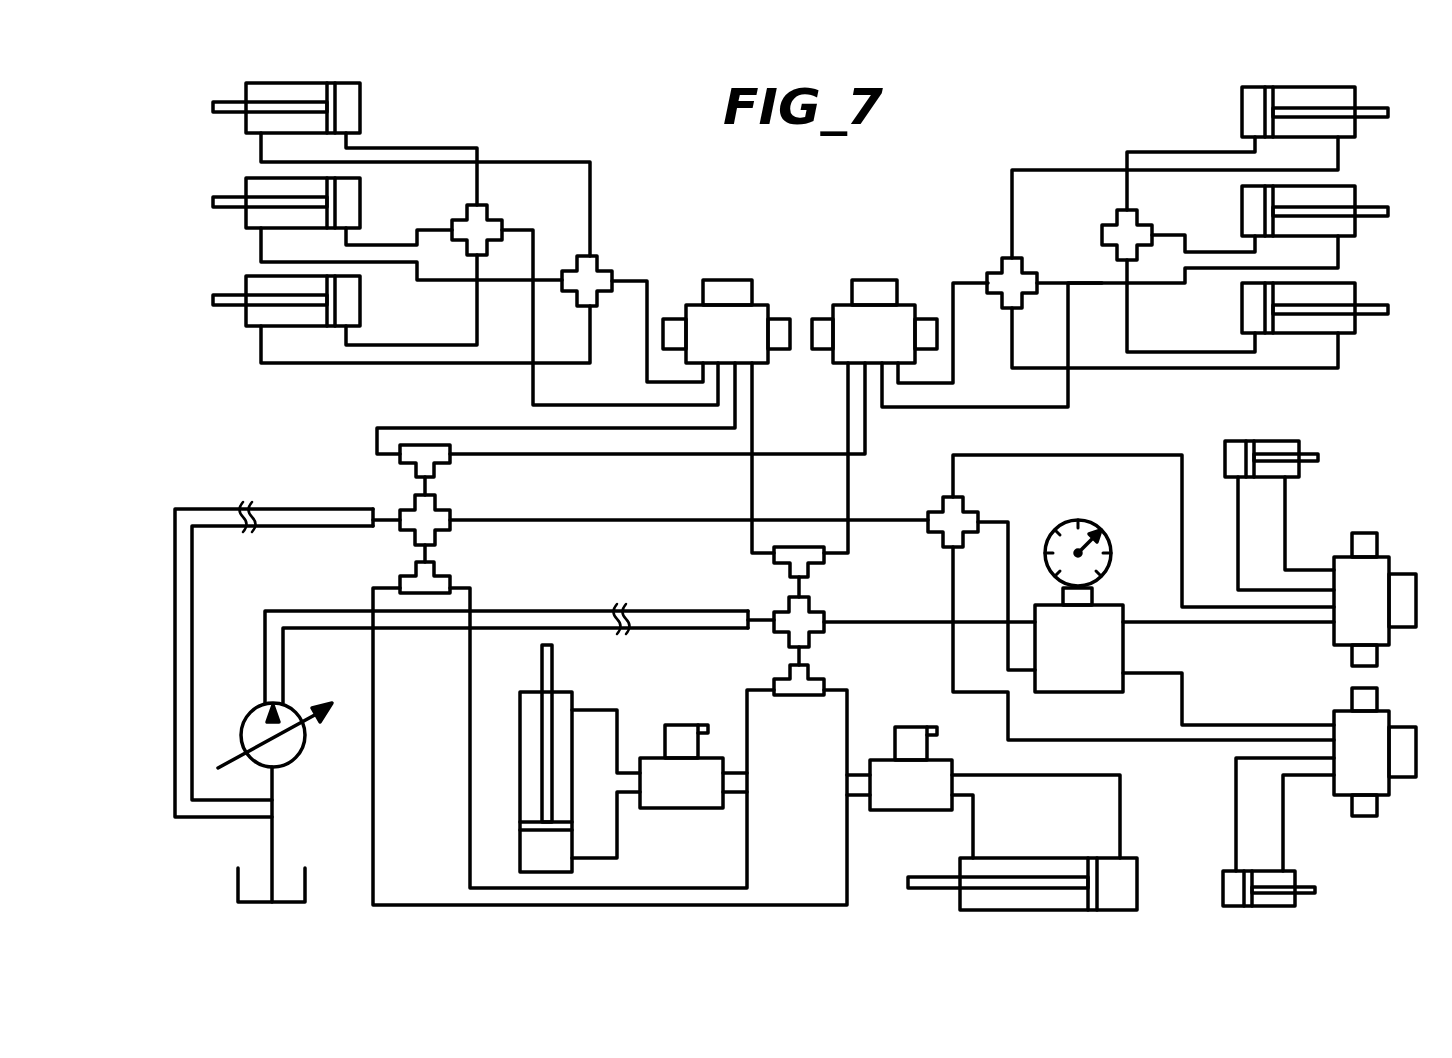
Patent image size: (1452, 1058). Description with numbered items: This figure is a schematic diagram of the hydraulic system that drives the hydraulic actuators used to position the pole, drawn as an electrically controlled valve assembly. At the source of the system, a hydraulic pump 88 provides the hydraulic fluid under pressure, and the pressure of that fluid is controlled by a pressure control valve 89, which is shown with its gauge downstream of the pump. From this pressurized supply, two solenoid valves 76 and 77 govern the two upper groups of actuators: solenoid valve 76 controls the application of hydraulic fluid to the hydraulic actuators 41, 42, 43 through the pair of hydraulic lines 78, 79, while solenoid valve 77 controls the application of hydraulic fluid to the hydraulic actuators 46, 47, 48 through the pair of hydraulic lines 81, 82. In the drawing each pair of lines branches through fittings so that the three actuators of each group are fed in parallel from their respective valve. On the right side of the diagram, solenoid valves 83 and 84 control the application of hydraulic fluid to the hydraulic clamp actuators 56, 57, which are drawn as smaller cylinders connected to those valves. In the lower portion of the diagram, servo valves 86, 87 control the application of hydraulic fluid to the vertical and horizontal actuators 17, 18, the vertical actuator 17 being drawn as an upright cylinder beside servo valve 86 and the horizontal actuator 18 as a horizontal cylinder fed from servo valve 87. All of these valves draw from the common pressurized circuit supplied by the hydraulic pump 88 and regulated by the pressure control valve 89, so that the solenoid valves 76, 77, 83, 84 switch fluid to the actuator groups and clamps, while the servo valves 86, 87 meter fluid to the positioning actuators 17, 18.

The vertical actuator 17 is at (572, 700).
The horizontal actuator 18 is at (1067, 858).
The hydraulic actuator 41 is at (360, 114).
The hydraulic actuator 42 is at (246, 223).
The hydraulic actuator 43 is at (246, 323).
The hydraulic actuator 46 is at (1242, 122).
The hydraulic actuator 47 is at (1357, 232).
The hydraulic actuator 48 is at (1357, 332).
The hydraulic clamp actuator 56 is at (1303, 471).
The hydraulic clamp actuator 57 is at (1299, 877).
The solenoid valve 76 is at (735, 280).
The solenoid valve 77 is at (877, 280).
The hydraulic line 78 is at (647, 297).
The hydraulic line 79 is at (537, 252).
The hydraulic line 81 is at (953, 297).
The hydraulic line 82 is at (1068, 253).
The solenoid valve 83 is at (1389, 559).
The solenoid valve 84 is at (1389, 793).
The servo valve 86 is at (707, 808).
The servo valve 87 is at (885, 812).
The hydraulic pump 88 is at (297, 757).
The pressure control valve 89 is at (1125, 607).